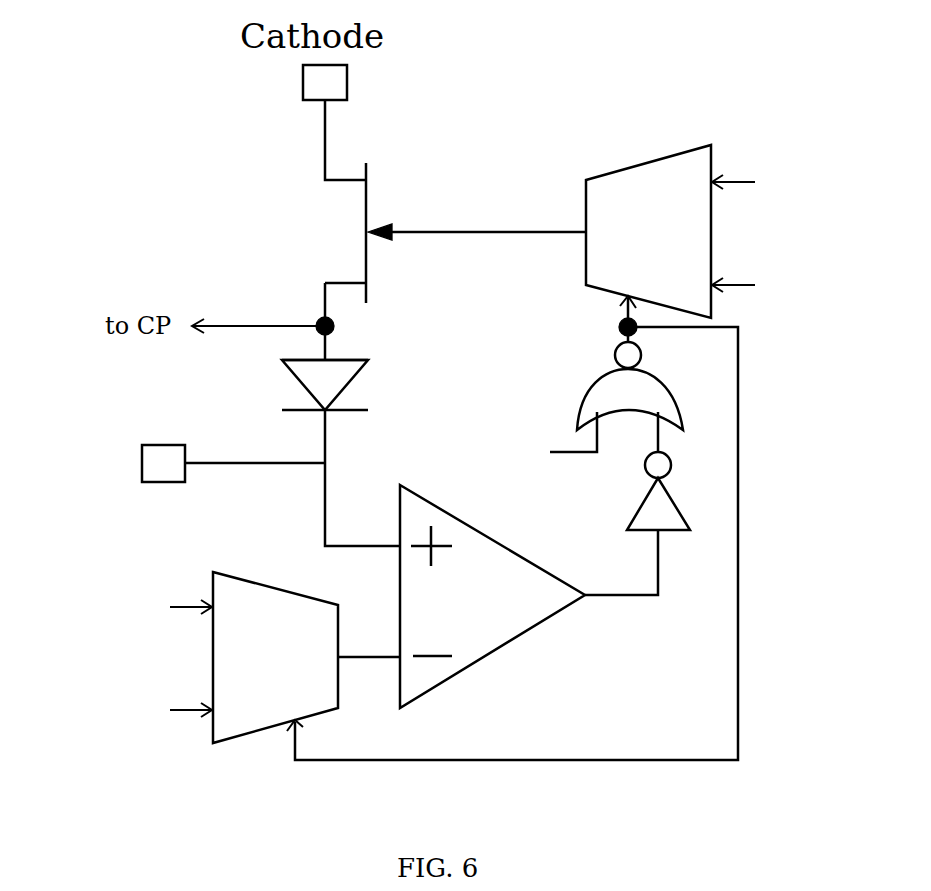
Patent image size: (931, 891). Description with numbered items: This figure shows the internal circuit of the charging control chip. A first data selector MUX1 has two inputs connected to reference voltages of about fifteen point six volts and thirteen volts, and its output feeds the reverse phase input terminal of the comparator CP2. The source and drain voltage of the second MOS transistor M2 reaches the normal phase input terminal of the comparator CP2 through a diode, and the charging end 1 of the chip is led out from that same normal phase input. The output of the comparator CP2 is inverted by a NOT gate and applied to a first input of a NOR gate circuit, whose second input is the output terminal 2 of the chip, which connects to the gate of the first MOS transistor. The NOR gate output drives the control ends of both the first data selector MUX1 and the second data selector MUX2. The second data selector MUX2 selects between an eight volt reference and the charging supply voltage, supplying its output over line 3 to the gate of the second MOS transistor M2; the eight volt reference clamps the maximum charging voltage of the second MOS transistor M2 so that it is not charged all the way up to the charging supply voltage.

The charging end 1 is at (193, 460).
The output terminal 2 is at (562, 439).
The gate control signal from MUX2 to M2 3 is at (477, 221).
The second MOS transistor M2 is at (335, 244).
The first data selector MUX1 is at (246, 657).
The second data selector MUX2 is at (699, 231).
The comparator CP2 is at (492, 596).